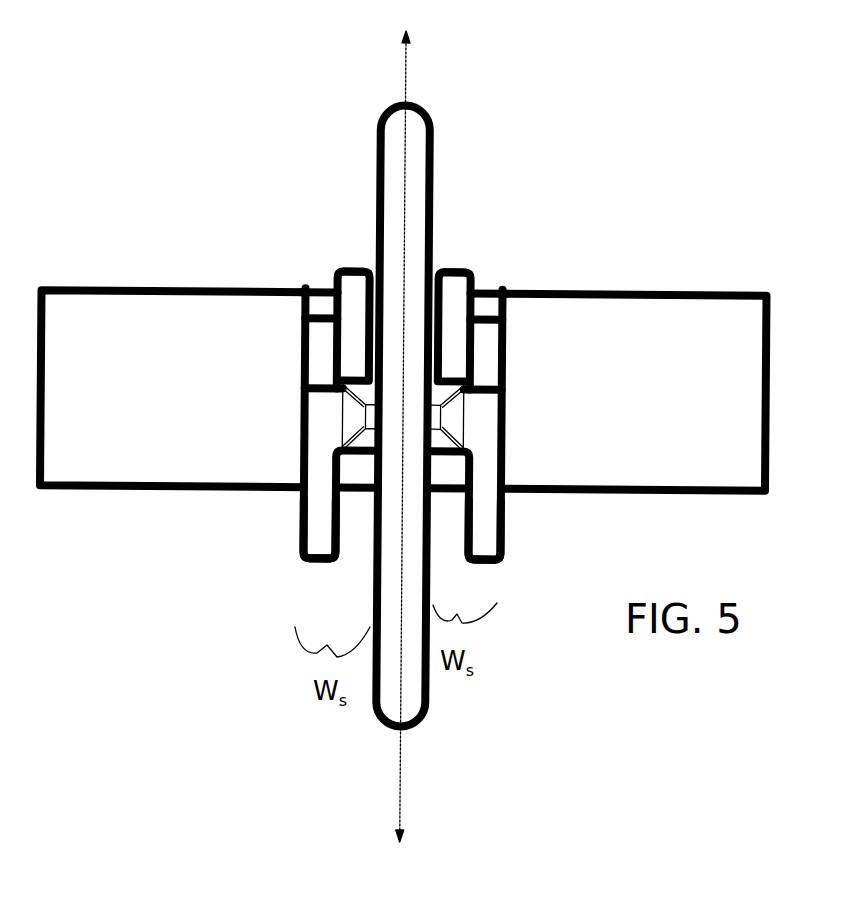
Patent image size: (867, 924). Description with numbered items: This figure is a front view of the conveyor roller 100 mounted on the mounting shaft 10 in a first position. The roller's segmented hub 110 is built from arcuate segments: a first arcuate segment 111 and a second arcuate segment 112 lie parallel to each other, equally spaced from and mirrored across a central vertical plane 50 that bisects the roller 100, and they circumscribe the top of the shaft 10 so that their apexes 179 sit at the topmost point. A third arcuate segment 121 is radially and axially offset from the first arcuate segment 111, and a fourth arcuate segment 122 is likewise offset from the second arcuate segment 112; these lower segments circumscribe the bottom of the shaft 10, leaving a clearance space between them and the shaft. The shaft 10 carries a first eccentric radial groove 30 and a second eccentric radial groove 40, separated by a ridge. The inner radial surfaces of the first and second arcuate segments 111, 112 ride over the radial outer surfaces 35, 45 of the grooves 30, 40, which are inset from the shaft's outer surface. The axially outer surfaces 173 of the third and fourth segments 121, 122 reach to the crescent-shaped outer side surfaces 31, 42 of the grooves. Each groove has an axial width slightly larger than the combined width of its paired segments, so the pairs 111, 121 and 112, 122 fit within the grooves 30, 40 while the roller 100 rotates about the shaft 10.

The mounting shaft 10 is at (587, 323).
The outer side surface 31 is at (303, 305).
The first eccentric radial groove 30 is at (311, 266).
The second eccentric radial groove 40 is at (487, 272).
The radial outer surface 35 is at (323, 313).
The radial outer surface 45 is at (487, 353).
The outer side surface 42 is at (510, 362).
The central vertical plane 50 is at (408, 60).
The conveyor roller 100 is at (455, 165).
The segmented hub 110 is at (330, 443).
The first arcuate segment 111 is at (350, 307).
The second arcuate segment 112 is at (465, 270).
The third arcuate segment 121 is at (320, 540).
The fourth arcuate segment 122 is at (487, 537).
The axially outer surface 173 is at (300, 548).
The apex 179 is at (355, 267).